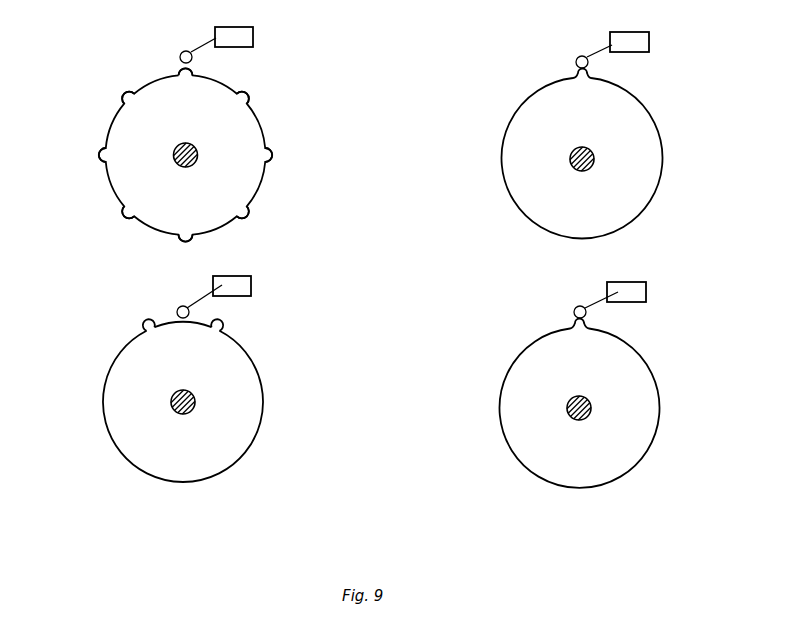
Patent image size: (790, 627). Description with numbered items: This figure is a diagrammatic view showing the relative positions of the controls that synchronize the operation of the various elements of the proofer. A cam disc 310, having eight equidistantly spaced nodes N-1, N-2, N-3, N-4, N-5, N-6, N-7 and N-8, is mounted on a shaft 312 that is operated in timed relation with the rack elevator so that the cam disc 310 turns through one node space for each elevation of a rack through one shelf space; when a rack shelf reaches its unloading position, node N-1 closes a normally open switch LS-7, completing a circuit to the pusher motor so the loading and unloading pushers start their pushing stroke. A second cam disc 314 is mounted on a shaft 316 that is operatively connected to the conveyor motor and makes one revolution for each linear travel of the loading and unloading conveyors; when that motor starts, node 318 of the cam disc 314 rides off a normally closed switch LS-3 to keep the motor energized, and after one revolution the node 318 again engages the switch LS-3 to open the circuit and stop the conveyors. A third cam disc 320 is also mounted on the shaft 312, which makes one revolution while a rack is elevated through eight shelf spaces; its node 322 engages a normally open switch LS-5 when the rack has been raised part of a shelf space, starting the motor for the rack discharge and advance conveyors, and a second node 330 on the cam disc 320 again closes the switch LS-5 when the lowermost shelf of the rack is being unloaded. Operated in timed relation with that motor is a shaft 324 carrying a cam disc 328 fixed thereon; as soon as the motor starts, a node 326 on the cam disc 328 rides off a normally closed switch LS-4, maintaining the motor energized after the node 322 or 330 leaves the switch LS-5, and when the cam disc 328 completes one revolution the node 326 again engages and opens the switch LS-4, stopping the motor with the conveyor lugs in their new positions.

The cam disc 310 is at (247, 120).
The shaft 312 is at (199, 156).
The node N-1 is at (194, 72).
The node N-2 is at (253, 91).
The node N-3 is at (273, 149).
The node N-4 is at (253, 216).
The node N-5 is at (193, 240).
The node N-6 is at (120, 212).
The node N-7 is at (100, 146).
The node N-8 is at (125, 89).
The normally open switch LS-7 is at (217, 34).
The cam disc 314 is at (628, 106).
The shaft 316 is at (596, 162).
The node 318 is at (590, 74).
The normally closed switch LS-3 is at (612, 39).
The cam disc 320 is at (248, 383).
The node 322 is at (225, 330).
The node 330 is at (142, 325).
The normally open switch LS-5 is at (232, 297).
The shaft 324 is at (593, 410).
The node 326 is at (589, 328).
The cam disc 328 is at (643, 382).
The normally closed switch LS-4 is at (610, 290).